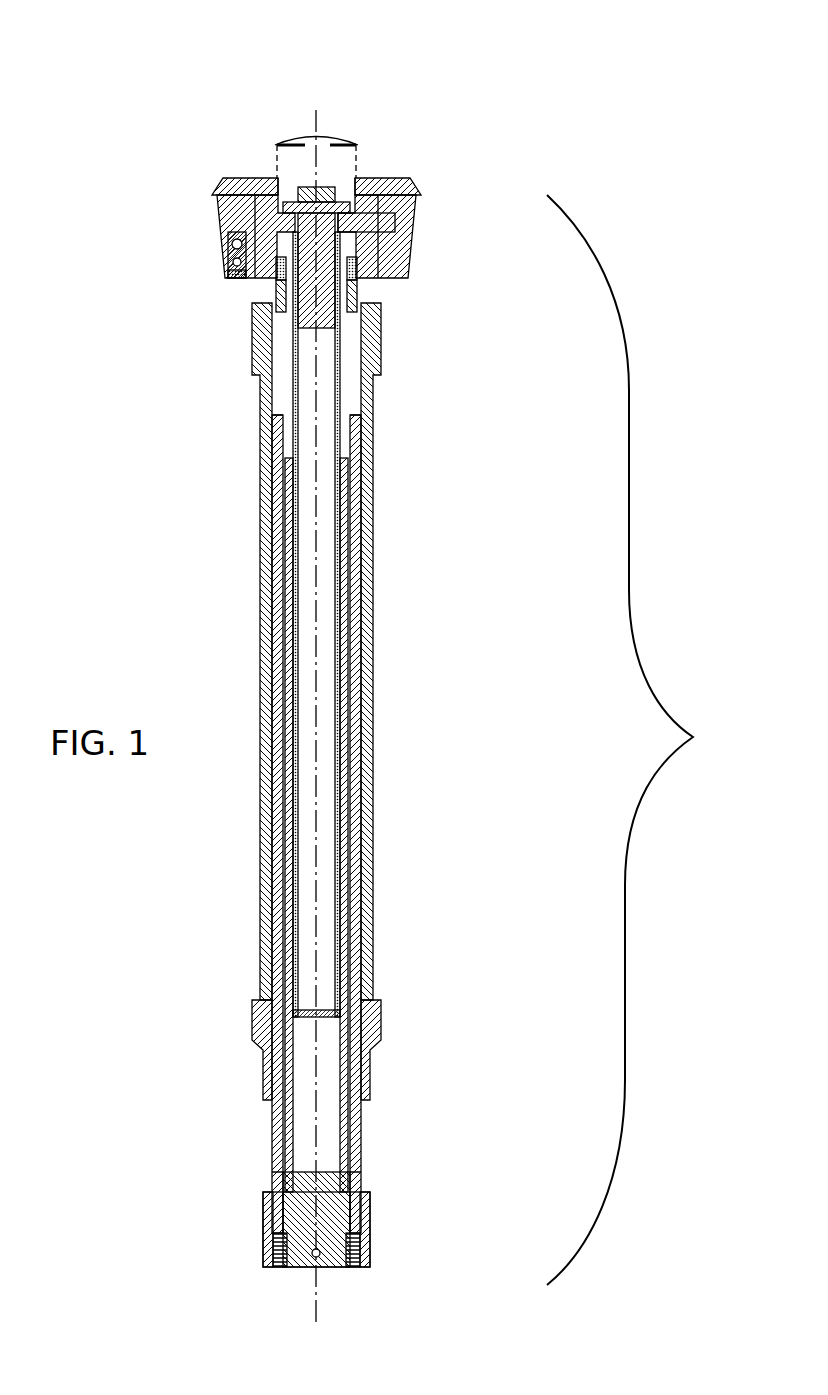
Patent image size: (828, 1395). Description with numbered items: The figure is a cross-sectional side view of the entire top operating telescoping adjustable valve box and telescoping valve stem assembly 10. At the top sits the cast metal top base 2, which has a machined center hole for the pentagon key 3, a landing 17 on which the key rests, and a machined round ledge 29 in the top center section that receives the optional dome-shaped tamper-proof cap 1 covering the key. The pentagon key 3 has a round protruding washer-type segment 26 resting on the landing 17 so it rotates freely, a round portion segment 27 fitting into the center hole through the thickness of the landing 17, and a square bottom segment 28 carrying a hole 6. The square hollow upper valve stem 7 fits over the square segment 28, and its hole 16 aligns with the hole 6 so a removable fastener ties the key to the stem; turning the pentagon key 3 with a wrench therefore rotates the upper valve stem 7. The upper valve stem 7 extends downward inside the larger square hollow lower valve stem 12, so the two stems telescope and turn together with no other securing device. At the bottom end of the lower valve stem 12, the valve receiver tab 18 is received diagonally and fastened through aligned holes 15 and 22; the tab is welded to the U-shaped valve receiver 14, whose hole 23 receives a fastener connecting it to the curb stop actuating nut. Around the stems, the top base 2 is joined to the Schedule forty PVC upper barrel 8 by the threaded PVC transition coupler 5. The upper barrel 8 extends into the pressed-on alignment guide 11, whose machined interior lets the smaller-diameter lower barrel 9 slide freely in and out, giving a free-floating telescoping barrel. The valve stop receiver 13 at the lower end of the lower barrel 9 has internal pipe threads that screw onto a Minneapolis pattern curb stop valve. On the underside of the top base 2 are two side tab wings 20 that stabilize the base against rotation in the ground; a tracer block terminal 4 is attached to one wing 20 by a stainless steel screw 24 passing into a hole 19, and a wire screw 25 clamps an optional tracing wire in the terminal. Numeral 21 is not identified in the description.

The tamper-proof cap 1 is at (358, 141).
The top base 2 is at (220, 185).
The pentagon key 3 is at (340, 187).
The tracer block terminal 4 is at (218, 238).
The PVC transition coupler 5 is at (345, 323).
The hole 6 is at (257, 318).
The upper valve stem 7 is at (362, 403).
The upper barrel 8 is at (262, 400).
The lower barrel 9 is at (362, 472).
The top operating telescoping adjustable valve box and telescoping valve stem assemb 10 is at (634, 740).
The alignment guide 11 is at (384, 1010).
The lower valve stem 12 is at (262, 485).
The valve stop receiver 13 is at (368, 1212).
The valve receiver 14 is at (287, 1268).
The hole 15 is at (285, 1192).
The hole 16 is at (285, 300).
The landing 17 is at (257, 178).
The valve receiver tab 18 is at (352, 1165).
The hole 19 is at (220, 262).
The side tab wings 20 is at (358, 272).
The cap recess 21 is at (295, 195).
The hole 22 is at (276, 1170).
The hole 23 is at (330, 1265).
The stainless steel screw 24 is at (220, 248).
The wire screw 25 is at (220, 275).
The washer-type segment 26 is at (380, 212).
The round portion segment 27 is at (370, 232).
The square segment 28 is at (357, 295).
The ledge 29 is at (355, 207).